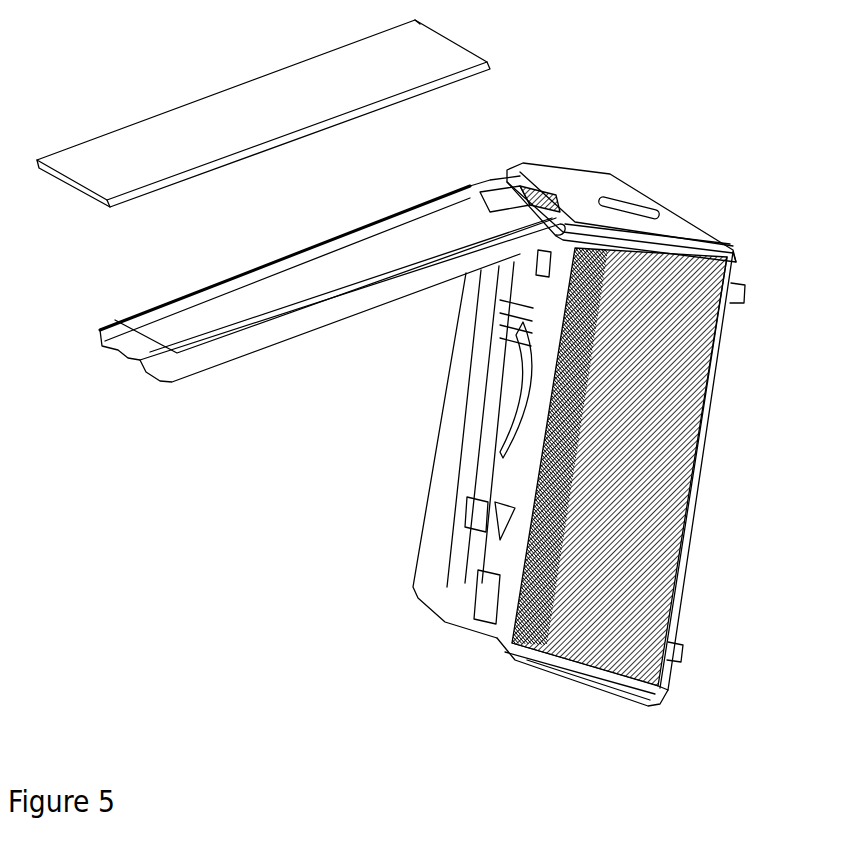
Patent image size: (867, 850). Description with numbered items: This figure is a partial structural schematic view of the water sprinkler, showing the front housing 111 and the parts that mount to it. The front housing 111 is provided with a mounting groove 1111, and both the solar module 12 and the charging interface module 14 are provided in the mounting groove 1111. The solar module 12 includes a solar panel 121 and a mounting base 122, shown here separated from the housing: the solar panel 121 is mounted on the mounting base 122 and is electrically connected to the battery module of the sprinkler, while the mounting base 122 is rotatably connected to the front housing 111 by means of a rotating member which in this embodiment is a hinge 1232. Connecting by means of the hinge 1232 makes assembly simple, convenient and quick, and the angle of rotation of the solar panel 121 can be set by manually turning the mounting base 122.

The solar module 12 is at (762, 35).
The solar panel 121 is at (423, 63).
The mounting base 122 is at (447, 197).
The hinge 1232 is at (563, 240).
The front housing 111 is at (615, 528).
The mounting groove 1111 is at (440, 489).
The charging interface module 14 is at (490, 598).